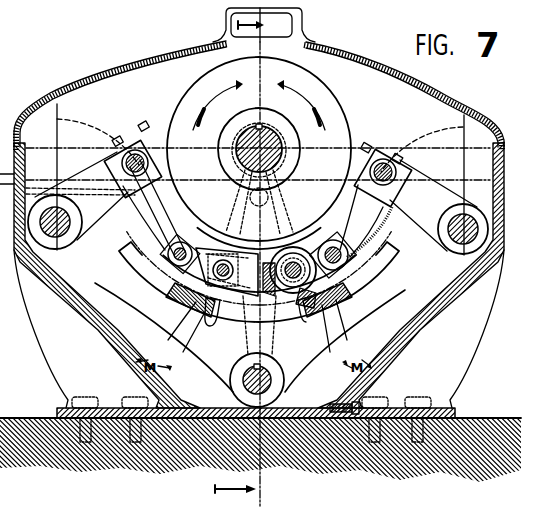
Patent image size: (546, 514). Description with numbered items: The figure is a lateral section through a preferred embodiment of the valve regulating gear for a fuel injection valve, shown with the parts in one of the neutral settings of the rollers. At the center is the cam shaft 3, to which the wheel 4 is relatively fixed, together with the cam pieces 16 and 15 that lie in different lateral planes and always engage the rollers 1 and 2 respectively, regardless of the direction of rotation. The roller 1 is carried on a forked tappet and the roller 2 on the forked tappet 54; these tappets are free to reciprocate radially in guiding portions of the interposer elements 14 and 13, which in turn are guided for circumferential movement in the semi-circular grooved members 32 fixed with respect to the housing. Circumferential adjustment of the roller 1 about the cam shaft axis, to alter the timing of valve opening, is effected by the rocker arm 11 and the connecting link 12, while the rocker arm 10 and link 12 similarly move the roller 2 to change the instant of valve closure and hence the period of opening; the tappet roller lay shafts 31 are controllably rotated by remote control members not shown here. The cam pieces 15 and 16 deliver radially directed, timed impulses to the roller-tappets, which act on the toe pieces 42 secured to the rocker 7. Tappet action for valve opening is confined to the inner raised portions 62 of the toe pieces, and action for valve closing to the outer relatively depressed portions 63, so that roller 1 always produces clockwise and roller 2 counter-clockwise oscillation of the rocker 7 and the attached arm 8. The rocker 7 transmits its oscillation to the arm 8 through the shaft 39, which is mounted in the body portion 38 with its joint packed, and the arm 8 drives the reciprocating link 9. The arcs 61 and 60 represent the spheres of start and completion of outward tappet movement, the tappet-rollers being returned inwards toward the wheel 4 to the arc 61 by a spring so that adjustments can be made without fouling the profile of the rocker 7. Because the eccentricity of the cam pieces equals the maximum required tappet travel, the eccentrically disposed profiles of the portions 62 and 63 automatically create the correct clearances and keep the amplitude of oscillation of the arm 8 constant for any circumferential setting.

The roller 1 is at (311, 252).
The roller 2 is at (183, 242).
The cam shaft 3 is at (273, 133).
The wheel 4 is at (279, 72).
The rocker 7 is at (222, 338).
The arm 8 is at (262, 225).
The link 9 is at (264, 259).
The rocker arm 10 is at (113, 250).
The rocker arm 11 is at (432, 240).
The connecting link 12 is at (157, 175).
The interposer element 13 is at (157, 275).
The interposer element 14 is at (367, 278).
The cam piece 15 is at (222, 233).
The cam piece 16 is at (303, 240).
The tappet roller lay shaft 31 is at (58, 240).
The semi-circular grooved member 32 is at (138, 212).
The body portion 38 is at (432, 325).
The shaft 39 is at (272, 383).
The toe piece 42 is at (178, 304).
The forked tappet 54 is at (306, 301).
The arc 60 is at (36, 288).
The arc 61 is at (55, 300).
The inner raised portion 62 is at (197, 300).
The outer depressed portion 63 is at (165, 292).